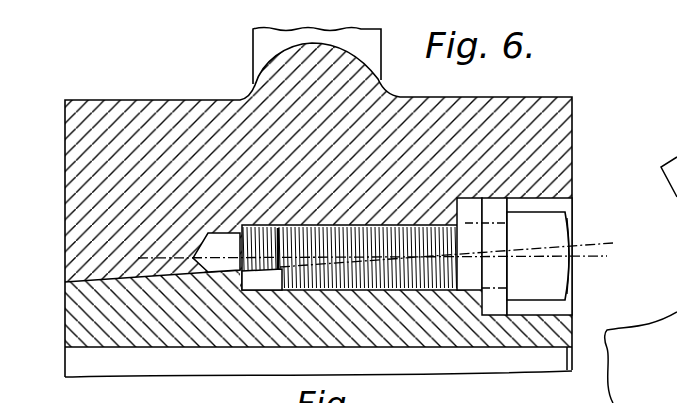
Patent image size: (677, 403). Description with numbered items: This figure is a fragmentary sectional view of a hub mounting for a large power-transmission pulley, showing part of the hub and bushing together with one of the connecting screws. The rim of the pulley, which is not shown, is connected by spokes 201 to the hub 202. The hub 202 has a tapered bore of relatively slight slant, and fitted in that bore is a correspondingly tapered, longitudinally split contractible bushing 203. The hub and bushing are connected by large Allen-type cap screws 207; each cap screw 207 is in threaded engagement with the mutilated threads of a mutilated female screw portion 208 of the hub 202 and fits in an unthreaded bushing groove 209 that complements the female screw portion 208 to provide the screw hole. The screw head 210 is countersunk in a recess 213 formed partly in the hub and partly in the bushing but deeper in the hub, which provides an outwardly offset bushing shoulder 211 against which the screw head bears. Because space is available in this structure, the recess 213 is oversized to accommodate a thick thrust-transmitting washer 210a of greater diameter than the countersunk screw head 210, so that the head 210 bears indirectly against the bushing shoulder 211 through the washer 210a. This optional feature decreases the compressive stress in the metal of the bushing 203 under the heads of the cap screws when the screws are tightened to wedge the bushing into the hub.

The spokes 201 is at (253, 45).
The hub 202 is at (540, 128).
The bushing 203 is at (205, 323).
The cap screws 207 is at (350, 228).
The mutilated female screw portions 208 is at (257, 228).
The bushing grooves 209 is at (268, 285).
The screw heads 210 is at (548, 275).
The thrust-transmitting washers 210a is at (492, 306).
The bushing shoulders 211 is at (482, 303).
The recesses 213 is at (560, 205).